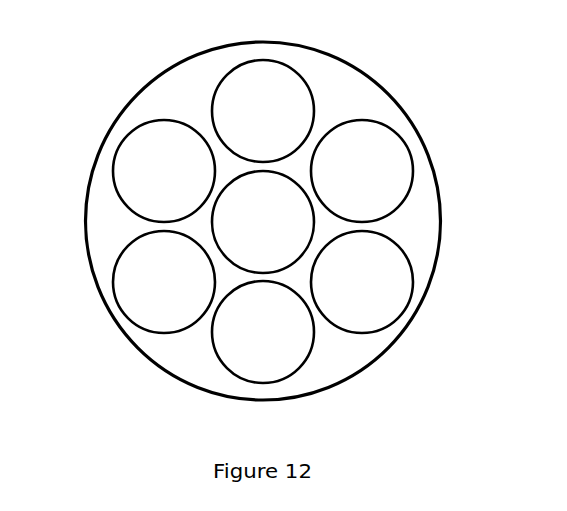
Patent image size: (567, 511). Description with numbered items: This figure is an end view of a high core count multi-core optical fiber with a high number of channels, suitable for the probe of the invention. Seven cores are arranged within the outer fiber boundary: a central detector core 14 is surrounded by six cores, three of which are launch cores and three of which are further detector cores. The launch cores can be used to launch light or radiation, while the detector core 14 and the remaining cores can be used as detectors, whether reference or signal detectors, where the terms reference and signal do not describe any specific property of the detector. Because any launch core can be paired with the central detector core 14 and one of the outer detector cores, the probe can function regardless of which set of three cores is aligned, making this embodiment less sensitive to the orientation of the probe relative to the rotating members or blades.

The detector core 14 is at (272, 193).